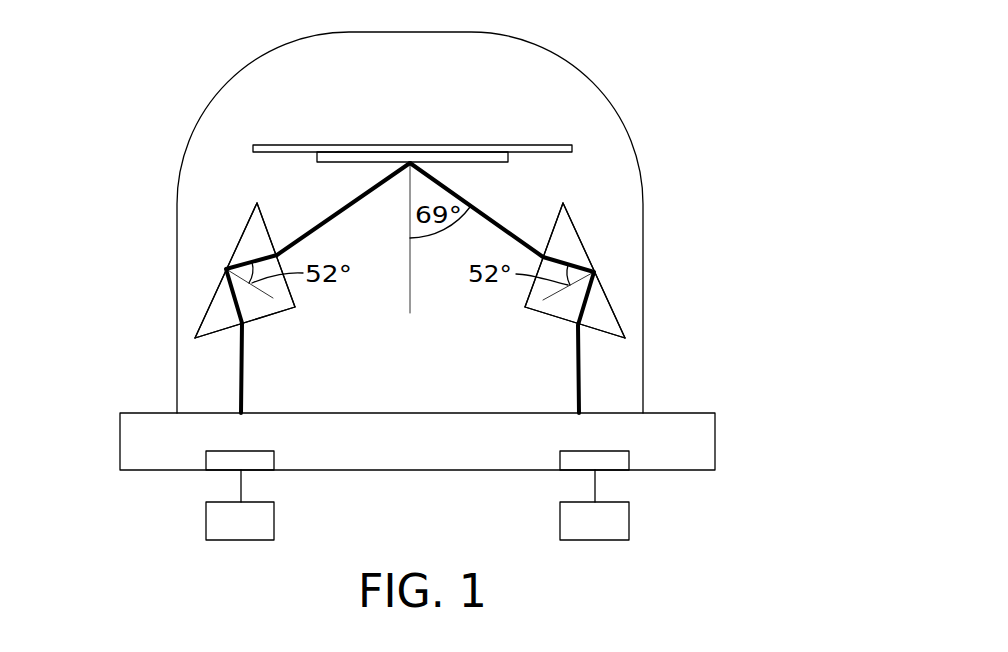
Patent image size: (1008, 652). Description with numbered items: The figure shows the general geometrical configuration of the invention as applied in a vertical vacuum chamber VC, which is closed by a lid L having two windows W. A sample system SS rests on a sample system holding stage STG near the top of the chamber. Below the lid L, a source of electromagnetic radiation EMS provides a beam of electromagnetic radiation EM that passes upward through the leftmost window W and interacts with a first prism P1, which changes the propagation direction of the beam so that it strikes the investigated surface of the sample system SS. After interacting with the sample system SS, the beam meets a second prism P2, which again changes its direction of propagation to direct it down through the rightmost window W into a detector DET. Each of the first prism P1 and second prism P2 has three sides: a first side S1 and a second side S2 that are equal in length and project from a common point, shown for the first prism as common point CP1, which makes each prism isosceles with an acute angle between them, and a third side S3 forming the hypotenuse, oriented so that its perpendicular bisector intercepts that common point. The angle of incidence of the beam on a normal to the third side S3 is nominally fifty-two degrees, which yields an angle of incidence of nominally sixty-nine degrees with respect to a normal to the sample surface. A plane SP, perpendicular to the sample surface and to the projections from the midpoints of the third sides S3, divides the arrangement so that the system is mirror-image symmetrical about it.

The vertical vacuum chamber VC is at (604, 66).
The sample system holding stage STG is at (438, 138).
The sample system SS is at (511, 157).
The plane SP is at (408, 273).
The beam of electromagnetic radiation EM is at (246, 398).
The first prism P1 is at (227, 247).
The second prism P2 is at (615, 312).
The common point CP1 is at (303, 308).
The first side S1 is at (379, 283).
The second side S2 is at (441, 284).
The third side S3 is at (410, 270).
The lid L is at (160, 400).
The window W is at (213, 475).
The source of electromagnetic radiation EMS is at (240, 505).
The detector DET is at (594, 505).